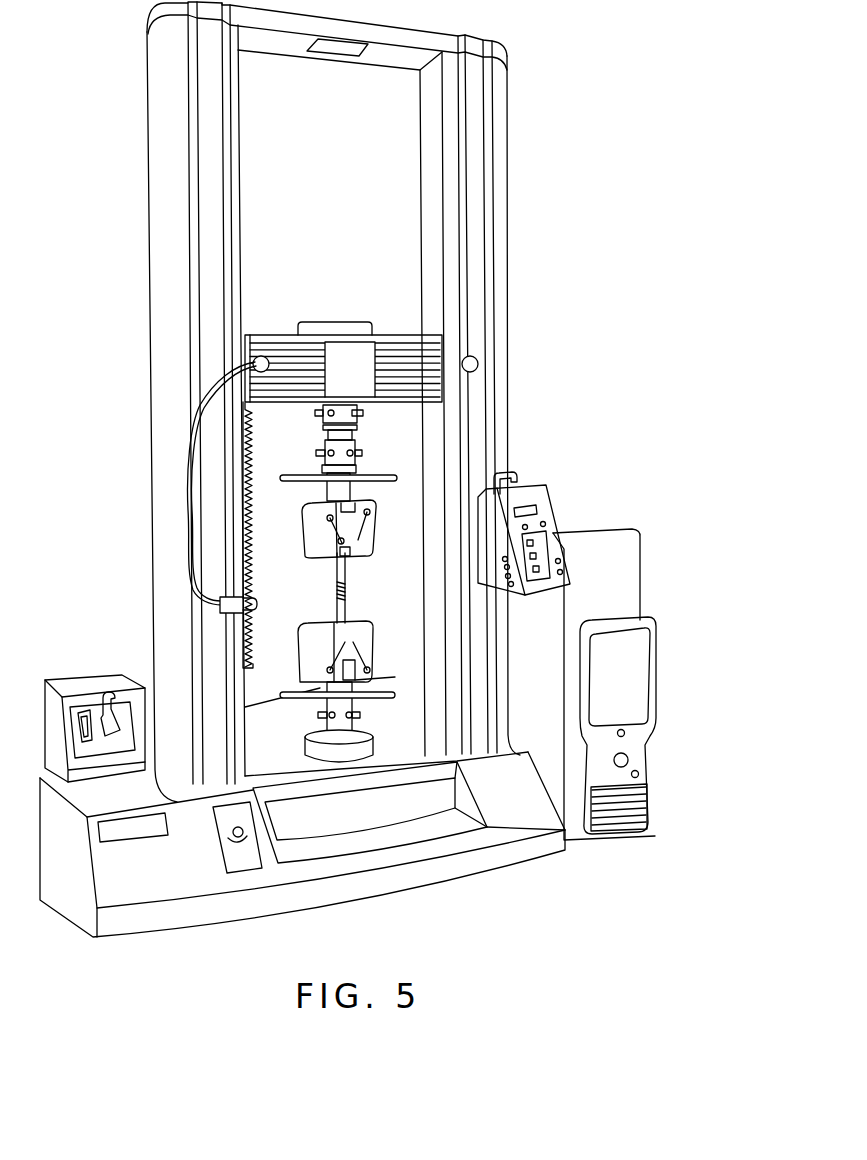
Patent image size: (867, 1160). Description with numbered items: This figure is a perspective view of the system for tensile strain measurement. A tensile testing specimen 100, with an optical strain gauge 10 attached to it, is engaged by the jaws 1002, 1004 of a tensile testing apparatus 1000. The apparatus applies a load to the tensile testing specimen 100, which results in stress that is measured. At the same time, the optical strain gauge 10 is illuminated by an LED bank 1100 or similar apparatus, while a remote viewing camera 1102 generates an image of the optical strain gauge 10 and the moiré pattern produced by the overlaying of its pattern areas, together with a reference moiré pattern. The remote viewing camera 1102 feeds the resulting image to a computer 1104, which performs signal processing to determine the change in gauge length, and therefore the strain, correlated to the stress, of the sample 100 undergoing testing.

The tensile testing apparatus 1000 is at (210, 336).
The LED bank 1100 is at (233, 505).
The remote viewing camera 1102 is at (210, 607).
The jaw 1002 is at (308, 520).
The jaw 1004 is at (318, 645).
The tensile testing specimen 100 is at (333, 567).
The optical strain gauge 10 is at (347, 585).
The computer 1104 is at (626, 840).